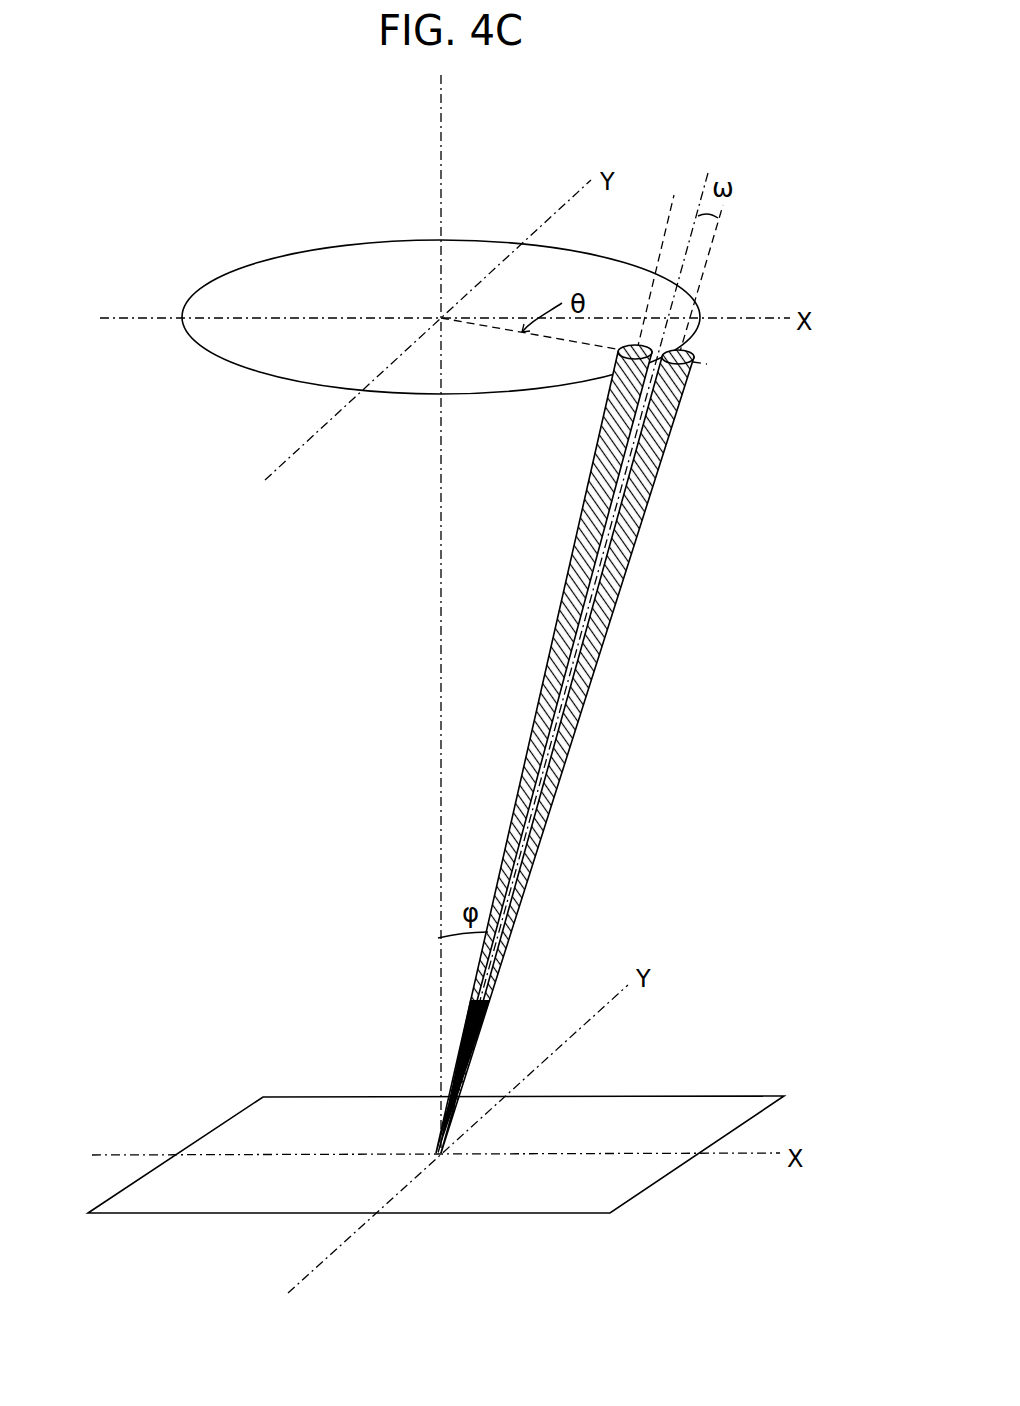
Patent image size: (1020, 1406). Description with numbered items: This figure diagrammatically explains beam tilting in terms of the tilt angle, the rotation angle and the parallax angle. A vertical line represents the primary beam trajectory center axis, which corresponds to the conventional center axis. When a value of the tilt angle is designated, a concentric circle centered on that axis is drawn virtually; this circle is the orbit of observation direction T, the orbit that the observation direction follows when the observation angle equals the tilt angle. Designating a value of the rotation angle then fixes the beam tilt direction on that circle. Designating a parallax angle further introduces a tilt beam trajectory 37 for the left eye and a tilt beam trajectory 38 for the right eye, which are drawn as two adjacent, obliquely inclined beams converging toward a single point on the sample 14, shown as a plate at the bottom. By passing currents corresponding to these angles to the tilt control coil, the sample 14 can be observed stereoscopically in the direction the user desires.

The sample 14 is at (152, 1213).
The tilt beam trajectory for left eye 37 is at (568, 600).
The tilt beam trajectory for right eye 38 is at (616, 600).
The orbit of observation direction T is at (278, 257).